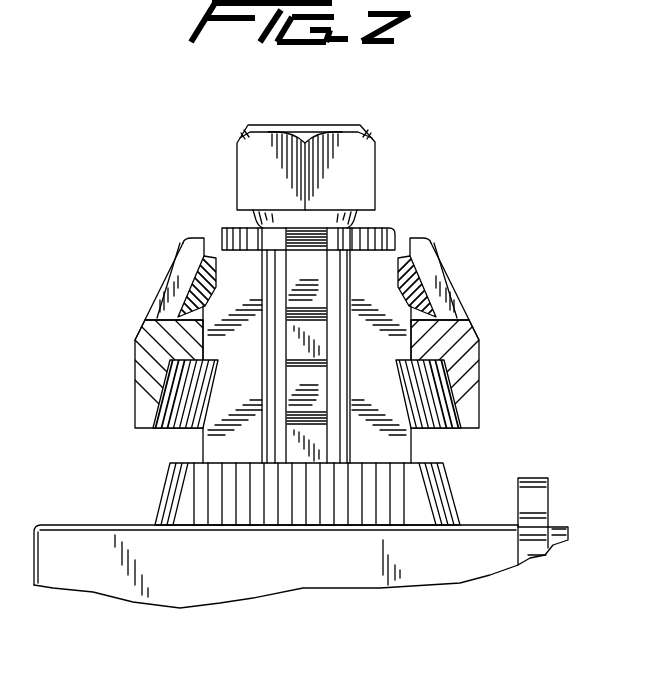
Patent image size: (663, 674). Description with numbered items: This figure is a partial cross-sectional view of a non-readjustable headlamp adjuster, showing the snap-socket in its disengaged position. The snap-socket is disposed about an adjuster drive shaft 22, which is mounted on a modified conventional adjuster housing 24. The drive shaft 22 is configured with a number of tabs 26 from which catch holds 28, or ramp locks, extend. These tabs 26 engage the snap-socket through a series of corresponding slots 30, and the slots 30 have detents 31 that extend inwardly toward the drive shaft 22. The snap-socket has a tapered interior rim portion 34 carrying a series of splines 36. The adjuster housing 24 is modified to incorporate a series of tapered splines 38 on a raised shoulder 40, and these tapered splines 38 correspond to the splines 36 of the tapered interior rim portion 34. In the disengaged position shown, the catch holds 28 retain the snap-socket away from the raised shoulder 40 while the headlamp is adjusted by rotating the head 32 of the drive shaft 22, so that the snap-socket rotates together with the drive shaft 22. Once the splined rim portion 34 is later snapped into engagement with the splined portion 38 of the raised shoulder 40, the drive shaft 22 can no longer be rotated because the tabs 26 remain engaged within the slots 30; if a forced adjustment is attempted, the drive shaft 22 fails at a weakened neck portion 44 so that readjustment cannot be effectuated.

The adjuster drive shaft 22 is at (342, 280).
The adjuster housing 24 is at (487, 553).
The tabs 26 is at (238, 258).
The catch holds 28 is at (195, 321).
The slots 30 is at (188, 252).
The detents 31 is at (200, 285).
The head 32 is at (355, 148).
The tapered interior rim portion 34 is at (183, 379).
The splines 36 is at (170, 430).
The tapered splines 38 is at (200, 497).
The raised shoulder 40 is at (453, 488).
The weakened neck portion 44 is at (372, 215).